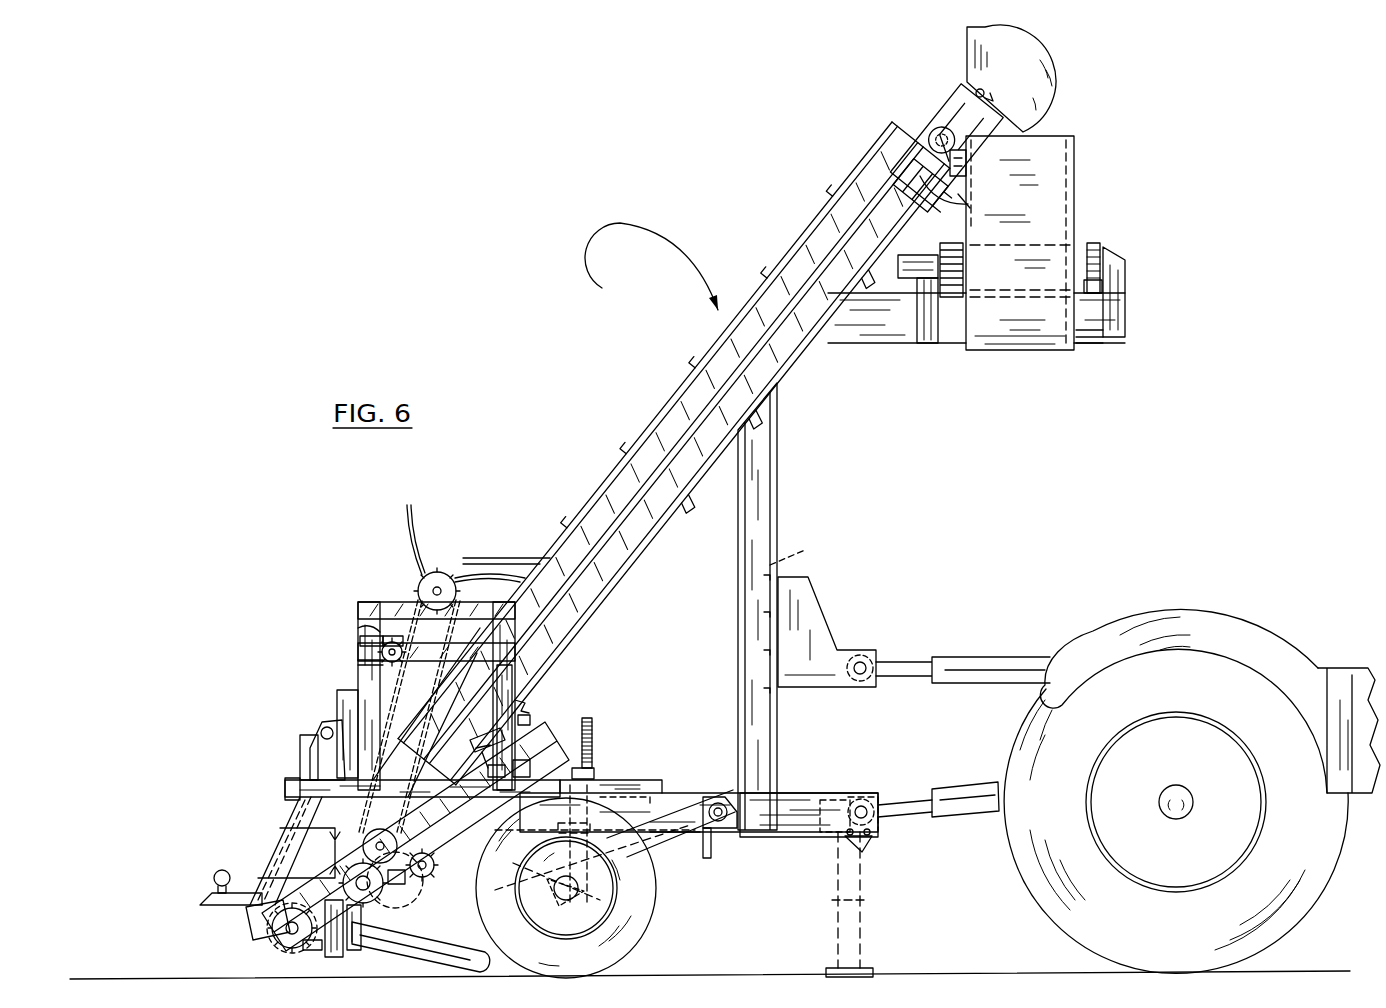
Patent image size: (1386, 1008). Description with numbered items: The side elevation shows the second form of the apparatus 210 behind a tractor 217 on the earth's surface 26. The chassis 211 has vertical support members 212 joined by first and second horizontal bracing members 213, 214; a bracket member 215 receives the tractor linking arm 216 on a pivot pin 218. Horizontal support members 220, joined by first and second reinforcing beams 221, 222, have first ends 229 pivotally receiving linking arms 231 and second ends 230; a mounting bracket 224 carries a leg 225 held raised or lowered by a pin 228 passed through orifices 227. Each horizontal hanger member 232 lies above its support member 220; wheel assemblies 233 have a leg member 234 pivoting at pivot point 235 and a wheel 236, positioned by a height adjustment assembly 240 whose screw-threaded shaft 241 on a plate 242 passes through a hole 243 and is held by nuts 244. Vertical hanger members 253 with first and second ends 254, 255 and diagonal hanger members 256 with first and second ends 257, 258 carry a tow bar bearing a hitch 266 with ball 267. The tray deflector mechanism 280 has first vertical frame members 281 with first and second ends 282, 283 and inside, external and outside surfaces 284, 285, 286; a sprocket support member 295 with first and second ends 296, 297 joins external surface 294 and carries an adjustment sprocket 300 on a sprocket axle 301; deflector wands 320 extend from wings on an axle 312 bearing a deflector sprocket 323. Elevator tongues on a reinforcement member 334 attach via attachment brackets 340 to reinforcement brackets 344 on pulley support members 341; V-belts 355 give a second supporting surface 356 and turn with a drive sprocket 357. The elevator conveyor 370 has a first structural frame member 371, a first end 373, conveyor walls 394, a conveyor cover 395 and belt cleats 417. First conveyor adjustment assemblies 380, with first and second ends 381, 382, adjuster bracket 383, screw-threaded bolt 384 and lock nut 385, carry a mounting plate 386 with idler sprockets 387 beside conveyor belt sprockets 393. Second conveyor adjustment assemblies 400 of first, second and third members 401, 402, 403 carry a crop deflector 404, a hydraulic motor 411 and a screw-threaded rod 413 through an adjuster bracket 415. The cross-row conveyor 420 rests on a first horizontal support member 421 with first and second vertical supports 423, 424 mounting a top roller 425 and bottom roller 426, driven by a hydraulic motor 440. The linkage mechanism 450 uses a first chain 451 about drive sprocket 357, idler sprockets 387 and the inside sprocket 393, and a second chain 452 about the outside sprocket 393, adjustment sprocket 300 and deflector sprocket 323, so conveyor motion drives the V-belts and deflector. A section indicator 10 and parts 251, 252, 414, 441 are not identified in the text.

The section line 10 is at (286, 853).
The earth's surface 26 is at (1030, 977).
The apparatus 210 is at (651, 266).
The main frame 211 is at (837, 598).
The vertical support members 212 is at (789, 606).
The first horizontal bracing member 213 is at (806, 550).
The second horizontal bracing member 214 is at (766, 690).
The bracket member 215 is at (806, 618).
The linking arm 216 is at (911, 662).
The tractor 217 is at (1172, 582).
The pivot pin 218 is at (862, 660).
The horizontal support members 220 is at (698, 797).
The first reinforcing beam 221 is at (832, 806).
The second reinforcing beam 222 is at (733, 787).
The mounting bracket 224 is at (858, 800).
The leg 225 is at (708, 855).
The orifices 227 is at (860, 835).
The pin 228 is at (848, 830).
The first ends 229 is at (874, 813).
The second ends 230 is at (452, 832).
The linking arms 231 is at (920, 800).
The horizontal hanger member 232 is at (798, 800).
The wheel assemblies 233 is at (620, 888).
The leg member 234 is at (660, 847).
The pivot point 235 is at (720, 790).
The wheel 236 is at (590, 908).
The height adjustment assembly 240 is at (612, 787).
The screw-threaded shaft 241 is at (593, 724).
The plate 242 is at (526, 877).
The hole 243 is at (618, 798).
The nut 244 is at (594, 768).
The tongue end 251 is at (298, 782).
The frame end 252 is at (667, 800).
The vertical hanger members 253 is at (283, 824).
The first end 254 is at (277, 888).
The second end 255 is at (308, 777).
The diagonal hanger member 256 is at (297, 850).
The first end 257 is at (531, 772).
The second end 258 is at (245, 927).
The hitch 266 is at (217, 900).
The ball 267 is at (212, 878).
The tray deflector mechanism 280 is at (431, 700).
The first vertical frame members 281 is at (357, 661).
The first end 282 is at (374, 600).
The second end 283 is at (370, 753).
The inside surface 284 is at (388, 677).
The external surface 285 is at (370, 710).
The outside surface 286 is at (360, 641).
The external surface 294 is at (510, 682).
The sprocket support member 295 is at (467, 643).
The first end 296 is at (362, 626).
The second end 297 is at (505, 650).
The adjustment sprocket 300 is at (386, 640).
The sprocket axle 301 is at (380, 653).
The axle 312 is at (440, 572).
The flexible deflector wands 320 is at (405, 512).
The deflector sprocket 323 is at (458, 575).
The reinforcement member 334 is at (357, 956).
The attachment brackets 340 is at (362, 930).
The pulley support members 341 is at (311, 948).
The reinforcement bracket 344 is at (338, 957).
The V-belts 355 is at (308, 747).
The second supporting surface 356 is at (401, 794).
The drive sprocket 357 is at (287, 944).
The elevator conveyor 370 is at (769, 405).
The first structural frame member 371 is at (790, 343).
The first end 373 is at (905, 183).
The first conveyor adjustment assemblies 380 is at (385, 851).
The first end 381 is at (409, 716).
The second end 382 is at (400, 896).
The adjuster bracket 383 is at (520, 707).
The screw-threaded bolt 384 is at (531, 720).
The lock nut 385 is at (500, 766).
The mounting plate 386 is at (505, 742).
The idler sprockets 387 is at (366, 836).
The conveyor belt sprockets 393 is at (370, 899).
The conveyor walls 394 is at (700, 385).
The conveyor cover 395 is at (610, 466).
The second conveyor adjustment assemblies 400 is at (952, 130).
The first frame member 401 is at (962, 102).
The second frame member 402 is at (990, 97).
The third member 403 is at (996, 88).
The crop deflector 404 is at (1060, 120).
The hydraulic motor 411 is at (926, 130).
The screw-threaded rod 413 is at (962, 166).
The strap 414 is at (934, 197).
The adjuster bracket 415 is at (966, 204).
The belt cleats 417 is at (620, 513).
The cross-row conveyor 420 is at (1053, 261).
The first horizontal support member 421 is at (1096, 331).
The first vertical support 423 is at (927, 330).
The second vertical support 424 is at (1120, 313).
The top roller 425 is at (1102, 247).
The bottom roller 426 is at (1103, 286).
The hydraulic motor 440 is at (915, 265).
The box bottom 441 is at (1012, 345).
The linkage mechanism 450 is at (318, 818).
The first chain 451 is at (277, 942).
The second chain 452 is at (460, 585).